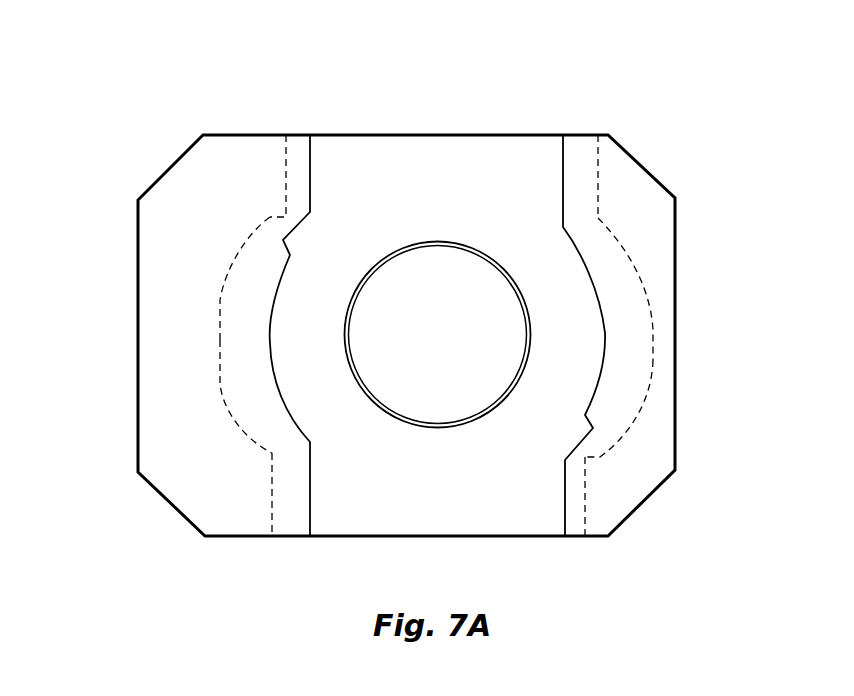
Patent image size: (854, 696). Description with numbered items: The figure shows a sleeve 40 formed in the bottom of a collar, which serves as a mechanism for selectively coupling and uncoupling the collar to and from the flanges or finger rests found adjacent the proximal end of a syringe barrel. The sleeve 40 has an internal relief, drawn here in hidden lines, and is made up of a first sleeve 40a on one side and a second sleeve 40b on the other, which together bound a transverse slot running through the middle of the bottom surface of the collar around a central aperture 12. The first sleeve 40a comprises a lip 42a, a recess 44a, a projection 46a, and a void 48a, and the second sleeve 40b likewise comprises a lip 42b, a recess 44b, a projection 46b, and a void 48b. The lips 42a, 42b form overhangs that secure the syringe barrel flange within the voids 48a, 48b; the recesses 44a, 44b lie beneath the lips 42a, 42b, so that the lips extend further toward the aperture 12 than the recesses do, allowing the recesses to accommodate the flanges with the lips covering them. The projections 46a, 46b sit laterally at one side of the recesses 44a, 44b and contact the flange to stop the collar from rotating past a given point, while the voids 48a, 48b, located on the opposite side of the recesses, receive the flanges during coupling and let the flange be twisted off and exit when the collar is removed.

The sleeve 40 is at (407, 116).
The aperture 12 is at (455, 275).
The lip 42a is at (278, 282).
The lip 42b is at (590, 265).
The first sleeve 40a is at (232, 320).
The second sleeve 40b is at (640, 330).
The recess 44a is at (240, 393).
The recess 44b is at (628, 398).
The projection 46a is at (288, 197).
The projection 46b is at (583, 462).
The void 48a is at (290, 525).
The void 48b is at (590, 162).